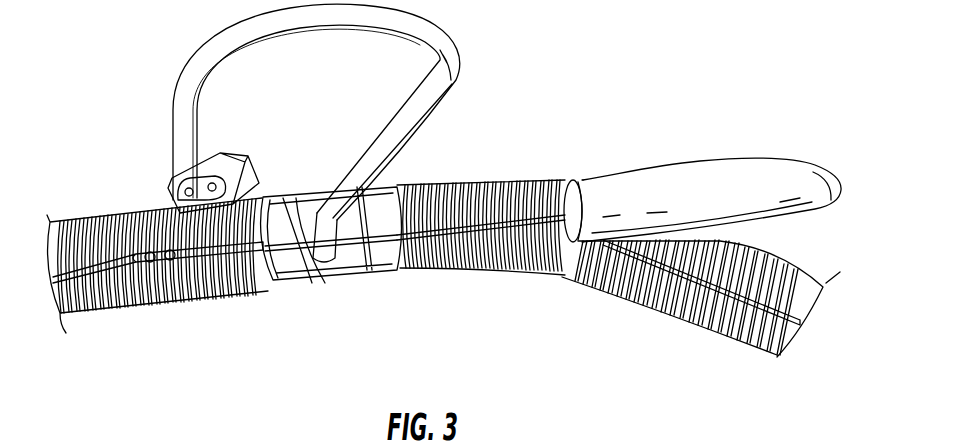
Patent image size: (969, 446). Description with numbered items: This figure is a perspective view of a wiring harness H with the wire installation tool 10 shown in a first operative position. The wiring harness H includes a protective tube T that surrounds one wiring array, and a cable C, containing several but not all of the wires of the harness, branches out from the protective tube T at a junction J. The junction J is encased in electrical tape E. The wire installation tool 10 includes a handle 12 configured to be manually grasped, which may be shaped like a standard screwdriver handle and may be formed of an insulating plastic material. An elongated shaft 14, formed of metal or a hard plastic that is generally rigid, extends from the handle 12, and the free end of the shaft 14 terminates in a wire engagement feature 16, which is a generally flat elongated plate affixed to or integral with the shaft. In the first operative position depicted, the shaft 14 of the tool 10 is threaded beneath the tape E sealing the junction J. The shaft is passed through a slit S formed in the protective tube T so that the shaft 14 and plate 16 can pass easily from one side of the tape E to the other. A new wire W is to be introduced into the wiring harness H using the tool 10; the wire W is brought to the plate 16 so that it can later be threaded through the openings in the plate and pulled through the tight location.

The cable C is at (453, 53).
The electrical tape E is at (373, 193).
The wiring harness H is at (505, 161).
The wire installation tool 10 is at (713, 154).
The handle 12 is at (773, 160).
The new wire W is at (88, 313).
The wire engagement feature 16 is at (165, 275).
The junction J is at (315, 290).
The elongated shaft 14 is at (432, 263).
The protective tube T is at (512, 280).
The slit S is at (693, 273).